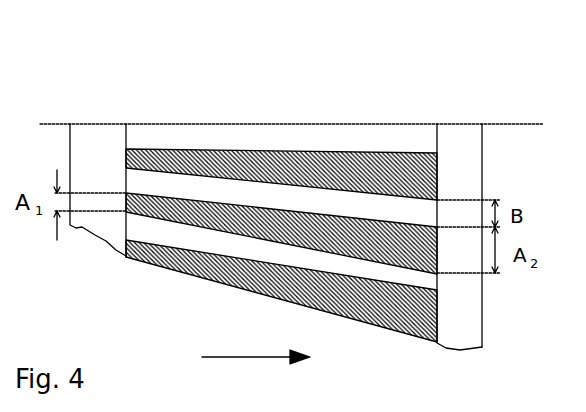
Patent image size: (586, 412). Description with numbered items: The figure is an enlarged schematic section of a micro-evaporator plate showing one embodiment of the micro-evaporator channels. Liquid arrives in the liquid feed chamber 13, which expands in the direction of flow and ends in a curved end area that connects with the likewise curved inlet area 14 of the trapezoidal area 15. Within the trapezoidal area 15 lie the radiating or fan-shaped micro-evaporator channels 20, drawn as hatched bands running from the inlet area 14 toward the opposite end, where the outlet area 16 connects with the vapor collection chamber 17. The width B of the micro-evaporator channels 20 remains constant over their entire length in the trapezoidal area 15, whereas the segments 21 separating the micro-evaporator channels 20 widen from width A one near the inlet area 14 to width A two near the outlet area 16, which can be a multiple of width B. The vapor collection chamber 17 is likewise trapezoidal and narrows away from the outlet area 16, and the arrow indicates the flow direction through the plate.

The liquid feed chamber 13 is at (87, 172).
The inlet area 14 is at (126, 150).
The trapezoidal area 15 is at (280, 65).
The outlet area 16 is at (440, 183).
The vapor collection chamber 17 is at (472, 180).
The micro-evaporator channels 20 is at (312, 255).
The segments 21 is at (378, 300).